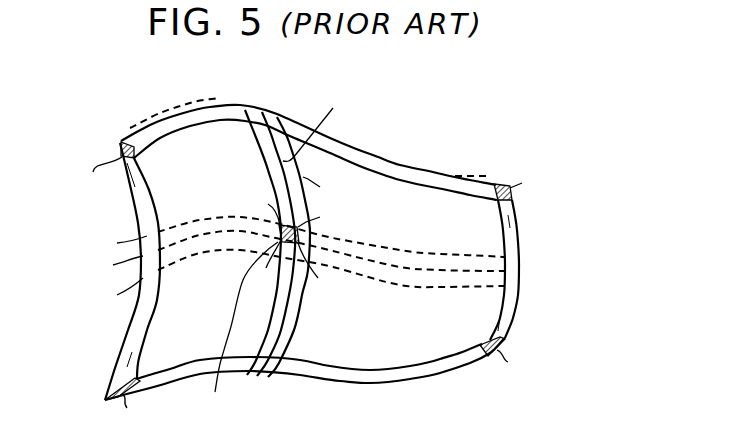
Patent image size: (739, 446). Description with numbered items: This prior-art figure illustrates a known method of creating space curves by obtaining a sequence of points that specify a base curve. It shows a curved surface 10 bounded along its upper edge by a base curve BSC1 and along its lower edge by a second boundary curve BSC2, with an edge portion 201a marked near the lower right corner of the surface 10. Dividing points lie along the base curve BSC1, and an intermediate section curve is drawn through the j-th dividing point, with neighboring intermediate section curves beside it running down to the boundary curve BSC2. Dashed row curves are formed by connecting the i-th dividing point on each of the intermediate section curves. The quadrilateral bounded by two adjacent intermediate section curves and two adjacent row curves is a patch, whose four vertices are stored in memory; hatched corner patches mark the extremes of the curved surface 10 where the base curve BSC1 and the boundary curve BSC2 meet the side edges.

The curved surface 10 is at (552, 269).
The boundary curve segment 201a is at (457, 345).
The base curve BSC1 is at (395, 163).
The second boundary surface curve BSC2 is at (331, 384).